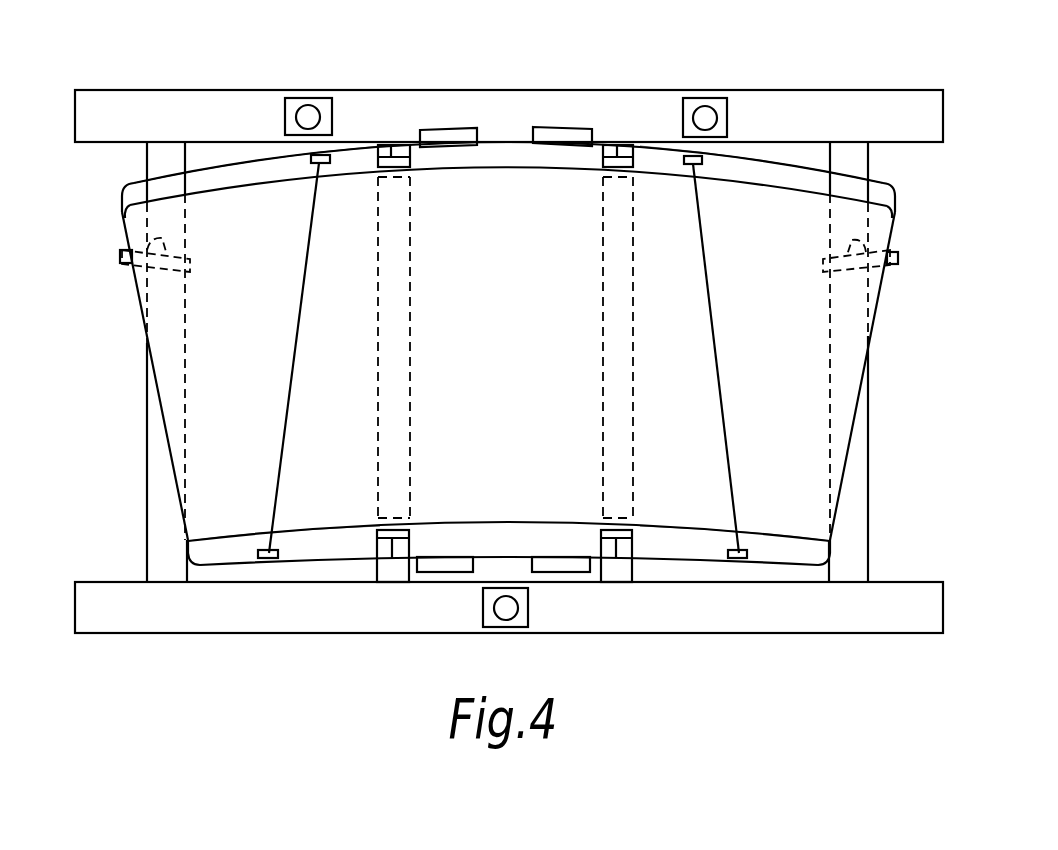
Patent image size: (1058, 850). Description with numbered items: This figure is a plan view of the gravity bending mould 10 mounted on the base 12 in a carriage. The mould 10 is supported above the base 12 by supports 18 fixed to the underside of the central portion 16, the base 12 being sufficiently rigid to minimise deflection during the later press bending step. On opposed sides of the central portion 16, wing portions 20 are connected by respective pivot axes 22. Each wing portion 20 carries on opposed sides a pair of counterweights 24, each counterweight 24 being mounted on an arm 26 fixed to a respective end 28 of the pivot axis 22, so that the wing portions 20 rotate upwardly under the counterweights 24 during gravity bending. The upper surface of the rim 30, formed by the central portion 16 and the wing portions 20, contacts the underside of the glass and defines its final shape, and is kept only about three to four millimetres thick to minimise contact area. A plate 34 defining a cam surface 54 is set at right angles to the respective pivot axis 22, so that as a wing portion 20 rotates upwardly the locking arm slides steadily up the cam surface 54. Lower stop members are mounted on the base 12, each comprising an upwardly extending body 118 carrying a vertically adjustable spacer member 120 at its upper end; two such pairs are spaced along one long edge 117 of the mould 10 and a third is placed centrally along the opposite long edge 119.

The mould 10 is at (167, 435).
The base 12 is at (812, 113).
The central portion 16 is at (492, 167).
The supports 18 is at (392, 150).
The wing portions 20 is at (137, 292).
The pivot axes 22 is at (292, 380).
The counterweights 24 is at (437, 137).
The arm 26 is at (133, 182).
The end of pivot axis 28 is at (316, 164).
The rim 30 is at (845, 475).
The plate 34 is at (120, 258).
The cam surface 54 is at (147, 233).
The long edge 117 is at (355, 167).
The upwardly extending body 118 is at (297, 102).
The opposite long edge 119 is at (488, 525).
The spacer member 120 is at (315, 112).